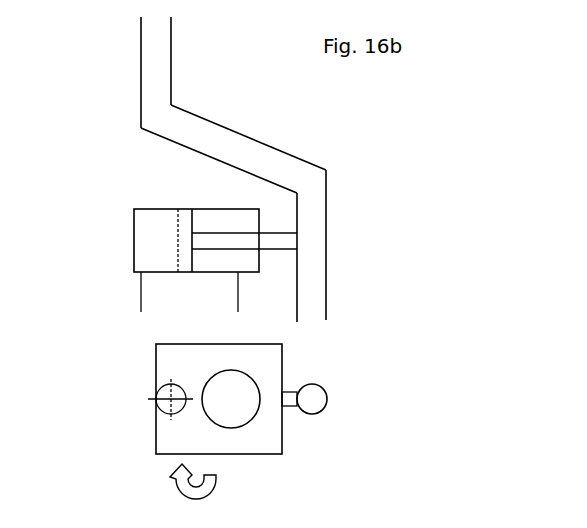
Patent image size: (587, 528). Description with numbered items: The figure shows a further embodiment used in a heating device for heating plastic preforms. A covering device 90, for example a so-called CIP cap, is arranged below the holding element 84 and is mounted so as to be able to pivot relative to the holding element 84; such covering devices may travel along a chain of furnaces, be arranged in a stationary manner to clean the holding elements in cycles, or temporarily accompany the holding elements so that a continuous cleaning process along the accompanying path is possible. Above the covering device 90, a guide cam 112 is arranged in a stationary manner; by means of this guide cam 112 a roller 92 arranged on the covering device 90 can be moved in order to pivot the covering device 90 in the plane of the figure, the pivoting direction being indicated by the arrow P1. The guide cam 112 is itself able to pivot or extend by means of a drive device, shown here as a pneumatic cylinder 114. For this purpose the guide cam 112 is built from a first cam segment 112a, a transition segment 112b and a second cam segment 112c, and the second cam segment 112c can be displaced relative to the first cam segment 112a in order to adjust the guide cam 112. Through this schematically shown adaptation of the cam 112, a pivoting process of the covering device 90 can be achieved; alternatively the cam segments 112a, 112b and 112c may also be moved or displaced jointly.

The guide cam 112 is at (233, 169).
The first cam segment 112a is at (160, 52).
The transition segment 112b is at (253, 152).
The second cam segment 112c is at (313, 271).
The pneumatic cylinder 114 is at (143, 263).
The covering device 90 is at (216, 409).
The holding element 84 is at (200, 423).
The roller 92 is at (315, 401).
The rotation direction P1 is at (210, 486).